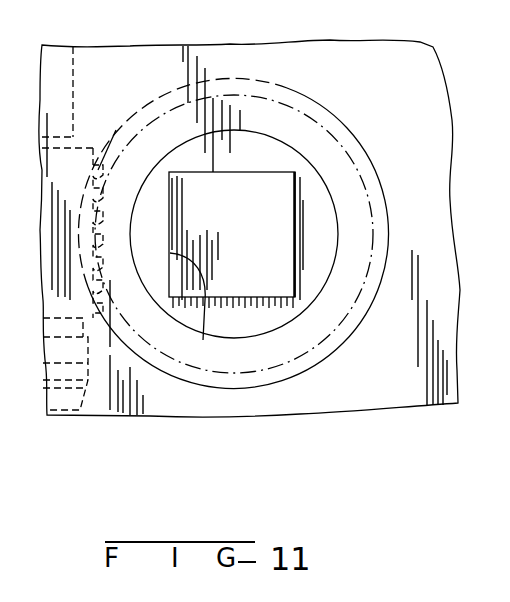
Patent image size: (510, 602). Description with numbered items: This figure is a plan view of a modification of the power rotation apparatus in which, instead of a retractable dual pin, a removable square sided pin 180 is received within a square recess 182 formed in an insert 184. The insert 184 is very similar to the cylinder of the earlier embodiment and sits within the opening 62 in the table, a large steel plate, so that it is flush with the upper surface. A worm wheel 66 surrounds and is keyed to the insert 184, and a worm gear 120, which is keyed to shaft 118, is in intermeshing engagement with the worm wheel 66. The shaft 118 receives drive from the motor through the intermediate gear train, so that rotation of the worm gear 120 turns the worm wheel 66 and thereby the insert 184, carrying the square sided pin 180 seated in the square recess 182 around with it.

The shaft 118 is at (73, 103).
The worm gear 120 is at (113, 138).
The opening 62 is at (322, 292).
The worm wheel 66 is at (314, 368).
The insert 184 is at (275, 152).
The removable square sided pin 180 is at (268, 236).
The square recess 182 is at (231, 308).